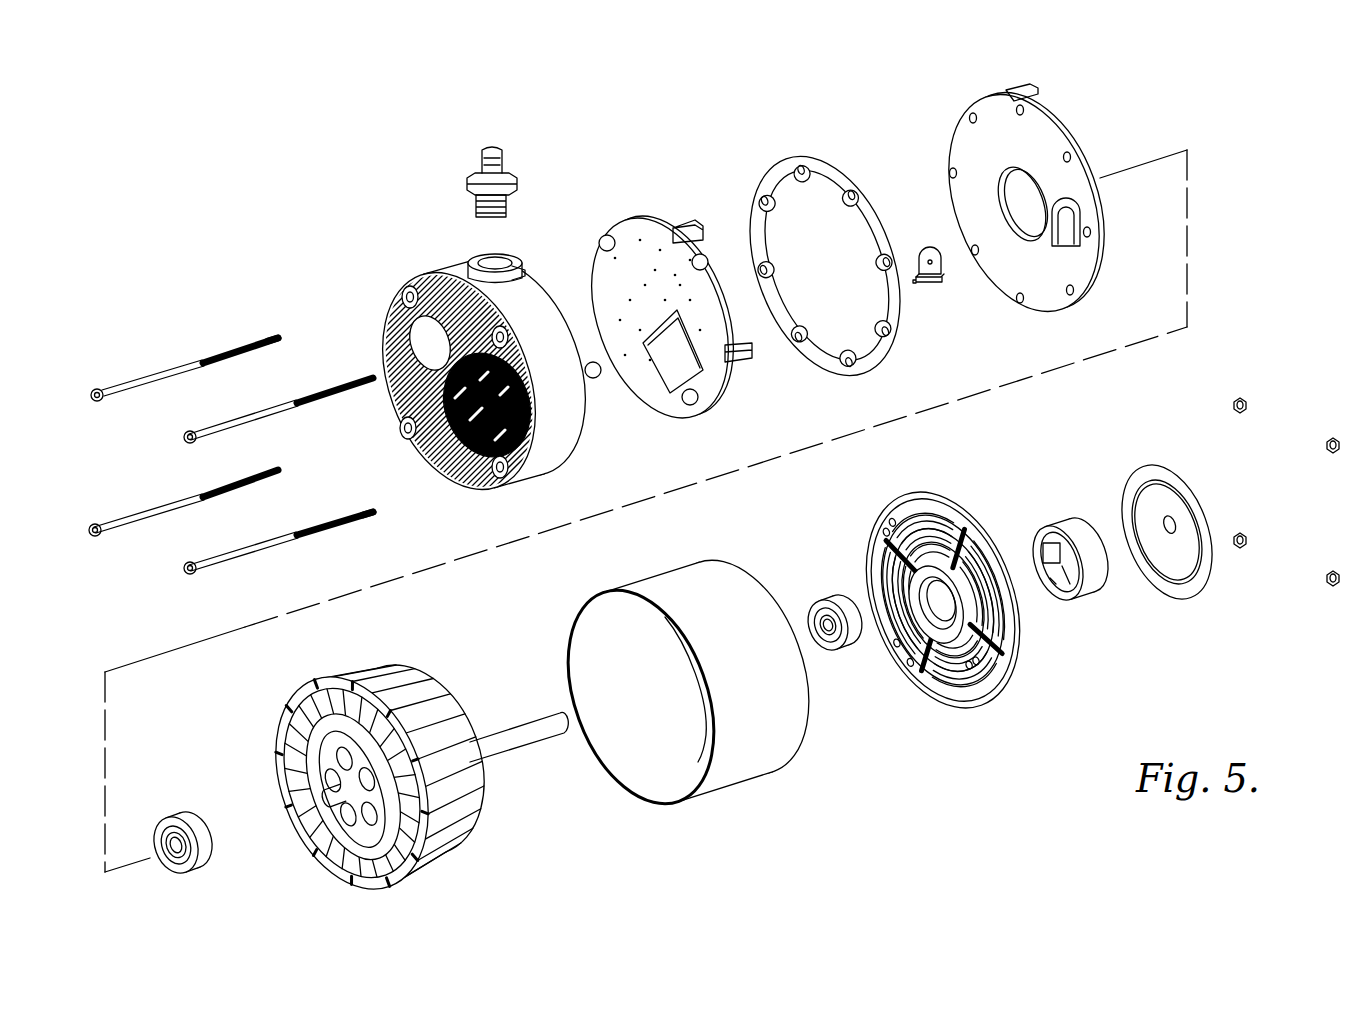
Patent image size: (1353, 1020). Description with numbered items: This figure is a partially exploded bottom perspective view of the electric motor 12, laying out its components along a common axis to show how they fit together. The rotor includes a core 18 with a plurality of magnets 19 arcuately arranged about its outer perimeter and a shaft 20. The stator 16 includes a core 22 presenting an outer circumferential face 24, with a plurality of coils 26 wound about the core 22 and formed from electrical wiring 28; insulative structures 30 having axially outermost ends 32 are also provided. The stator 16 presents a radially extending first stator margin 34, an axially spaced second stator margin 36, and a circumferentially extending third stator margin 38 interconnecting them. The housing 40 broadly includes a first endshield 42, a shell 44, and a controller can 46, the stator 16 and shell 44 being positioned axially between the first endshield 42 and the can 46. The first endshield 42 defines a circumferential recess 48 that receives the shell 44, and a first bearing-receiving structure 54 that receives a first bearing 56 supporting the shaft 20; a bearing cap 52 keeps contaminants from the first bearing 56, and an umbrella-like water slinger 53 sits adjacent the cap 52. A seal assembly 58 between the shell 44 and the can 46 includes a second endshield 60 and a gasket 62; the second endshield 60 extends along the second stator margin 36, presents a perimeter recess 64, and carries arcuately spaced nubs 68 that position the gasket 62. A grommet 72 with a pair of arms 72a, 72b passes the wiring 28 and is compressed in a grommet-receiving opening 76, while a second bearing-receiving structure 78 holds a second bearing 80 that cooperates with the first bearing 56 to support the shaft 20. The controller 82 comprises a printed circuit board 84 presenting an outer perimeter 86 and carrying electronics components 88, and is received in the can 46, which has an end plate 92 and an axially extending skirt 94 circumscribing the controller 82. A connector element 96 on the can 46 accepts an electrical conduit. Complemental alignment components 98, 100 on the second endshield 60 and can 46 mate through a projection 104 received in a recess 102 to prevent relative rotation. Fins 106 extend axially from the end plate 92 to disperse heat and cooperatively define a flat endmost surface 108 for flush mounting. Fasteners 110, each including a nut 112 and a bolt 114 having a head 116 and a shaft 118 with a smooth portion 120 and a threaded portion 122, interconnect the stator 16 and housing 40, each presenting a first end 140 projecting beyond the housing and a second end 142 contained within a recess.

The electric motor 12 is at (1203, 103).
The stator 16 is at (395, 754).
The core 18 is at (353, 786).
The magnets 19 is at (353, 787).
The shaft 20 is at (555, 727).
The core 22 is at (433, 765).
The outer circumferential face 24 is at (452, 800).
The coils 26 is at (401, 821).
The electrical wiring 28 is at (338, 844).
The insulative structures 30 is at (301, 745).
The axially outermost ends 32 is at (365, 722).
The first stator margin 34 is at (352, 782).
The second stator margin 36 is at (351, 783).
The third stator margin 38 is at (352, 783).
The housing 40 is at (503, 473).
The first endshield 42 is at (963, 583).
The shell 44 is at (725, 582).
The controller can 46 is at (492, 314).
The recess 48 is at (963, 583).
The bearing cap 52 is at (1083, 592).
The water slinger 53 is at (1152, 470).
The first bearing-receiving structure 54 is at (930, 607).
The first bearing 56 is at (846, 633).
The seal assembly 58 is at (810, 225).
The second endshield 60 is at (1034, 205).
The gasket 62 is at (795, 145).
The recess 64 is at (1036, 202).
The nubs 68 is at (954, 172).
The grommet 72 is at (965, 262).
The arm 72a is at (920, 280).
The arm 72b is at (941, 279).
The grommet-receiving opening 76 is at (1066, 248).
The second bearing-receiving structure 78 is at (1028, 204).
The second bearing 80 is at (163, 830).
The controller 82 is at (691, 264).
The printed circuit board 84 is at (654, 251).
The outer perimeter 86 is at (682, 410).
The electronics components 88 is at (695, 240).
The end plate 92 is at (522, 458).
The skirt 94 is at (556, 418).
The connector element 96 is at (506, 176).
The alignment component 98 is at (1069, 103).
The alignment component 100 is at (514, 282).
The recess 102 is at (510, 248).
The projection 104 is at (1032, 88).
The fins 106 is at (402, 300).
The endmost surface 108 is at (428, 468).
The fastener 110 is at (711, 447).
The nut 112 is at (1239, 398).
The bolt 114 is at (248, 432).
The head 116 is at (95, 399).
The shaft 118 is at (231, 348).
The smooth portion 120 is at (192, 366).
The threaded portion 122 is at (266, 337).
The first end 140 is at (231, 414).
The second end 142 is at (196, 414).